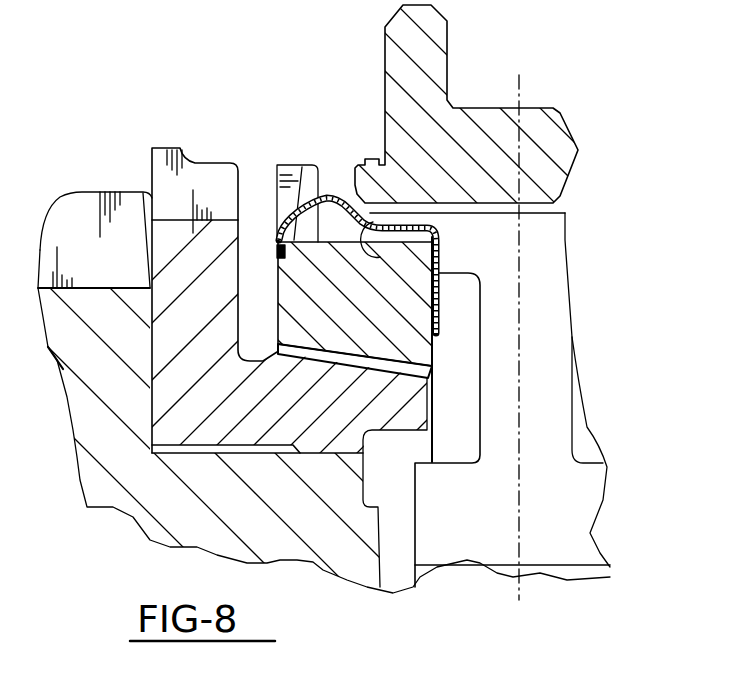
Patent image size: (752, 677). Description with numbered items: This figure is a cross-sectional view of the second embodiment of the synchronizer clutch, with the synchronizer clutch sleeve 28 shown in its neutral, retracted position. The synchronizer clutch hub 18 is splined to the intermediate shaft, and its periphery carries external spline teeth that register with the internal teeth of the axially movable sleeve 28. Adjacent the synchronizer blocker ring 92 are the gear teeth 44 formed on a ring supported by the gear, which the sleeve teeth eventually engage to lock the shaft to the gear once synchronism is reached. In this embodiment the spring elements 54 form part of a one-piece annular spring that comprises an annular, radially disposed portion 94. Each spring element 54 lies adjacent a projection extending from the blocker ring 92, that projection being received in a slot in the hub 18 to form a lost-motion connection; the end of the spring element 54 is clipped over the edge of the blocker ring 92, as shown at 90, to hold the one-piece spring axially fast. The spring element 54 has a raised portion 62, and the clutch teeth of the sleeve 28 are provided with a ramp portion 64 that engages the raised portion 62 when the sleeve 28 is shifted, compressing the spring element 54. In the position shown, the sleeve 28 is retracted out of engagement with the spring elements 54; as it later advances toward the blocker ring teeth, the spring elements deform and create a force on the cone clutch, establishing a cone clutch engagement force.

The synchronizer clutch sleeve 28 is at (475, 134).
The synchronizer clutch hub 18 is at (545, 417).
The radially disposed portion 94 is at (440, 302).
The gear teeth 44 is at (187, 177).
The clipped end of spring element 90 is at (277, 253).
The spring element 54 is at (390, 257).
The synchronizer blocker ring 92 is at (418, 347).
The raised portion 62 is at (327, 195).
The ramp portion 64 is at (413, 230).